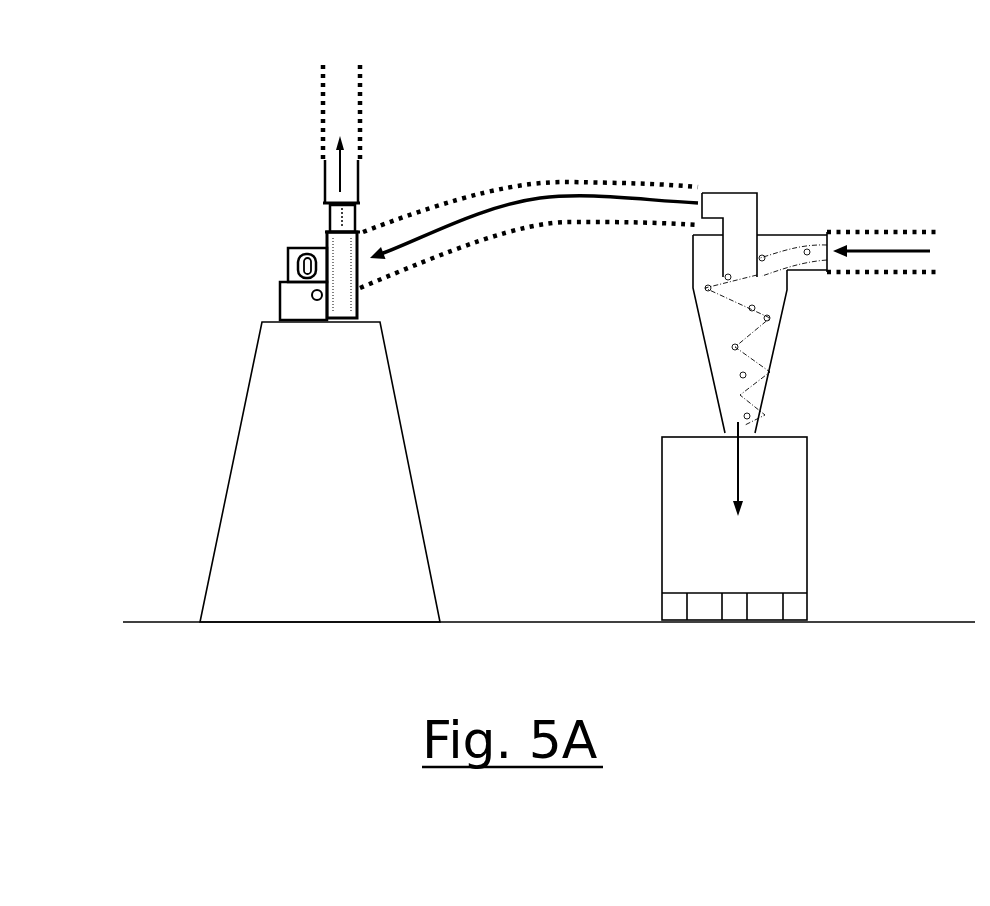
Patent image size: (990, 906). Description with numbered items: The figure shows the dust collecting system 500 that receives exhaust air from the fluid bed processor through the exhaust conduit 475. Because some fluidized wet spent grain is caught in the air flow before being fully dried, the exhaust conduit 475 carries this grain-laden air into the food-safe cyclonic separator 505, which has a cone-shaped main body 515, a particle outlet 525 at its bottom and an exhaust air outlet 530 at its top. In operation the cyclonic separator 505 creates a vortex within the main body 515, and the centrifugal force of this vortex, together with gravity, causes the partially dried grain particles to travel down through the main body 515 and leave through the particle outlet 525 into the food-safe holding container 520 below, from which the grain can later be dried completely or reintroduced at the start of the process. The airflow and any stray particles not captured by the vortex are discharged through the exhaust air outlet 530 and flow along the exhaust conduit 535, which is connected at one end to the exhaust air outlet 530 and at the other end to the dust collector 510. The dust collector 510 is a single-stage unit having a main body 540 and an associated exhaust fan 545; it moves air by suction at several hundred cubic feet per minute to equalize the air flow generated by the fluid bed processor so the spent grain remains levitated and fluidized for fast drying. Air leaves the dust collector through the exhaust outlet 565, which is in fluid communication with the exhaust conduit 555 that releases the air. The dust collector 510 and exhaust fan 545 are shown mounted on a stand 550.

The exhaust conduit 475 is at (902, 232).
The dust collecting system 500 is at (648, 106).
The cyclonic separator 505 is at (818, 196).
The dust collector 510 is at (226, 171).
The cone-shaped main body 515 is at (703, 330).
The food-safe holding container 520 is at (807, 500).
The particle outlet 525 is at (733, 440).
The exhaust air outlet 530 is at (738, 193).
The exhaust conduit 535 is at (525, 182).
The main body 540 is at (362, 302).
The exhaust fan 545 is at (290, 250).
The stand 550 is at (243, 413).
The exhaust conduit 555 is at (323, 120).
The exhaust outlet 565 is at (360, 218).